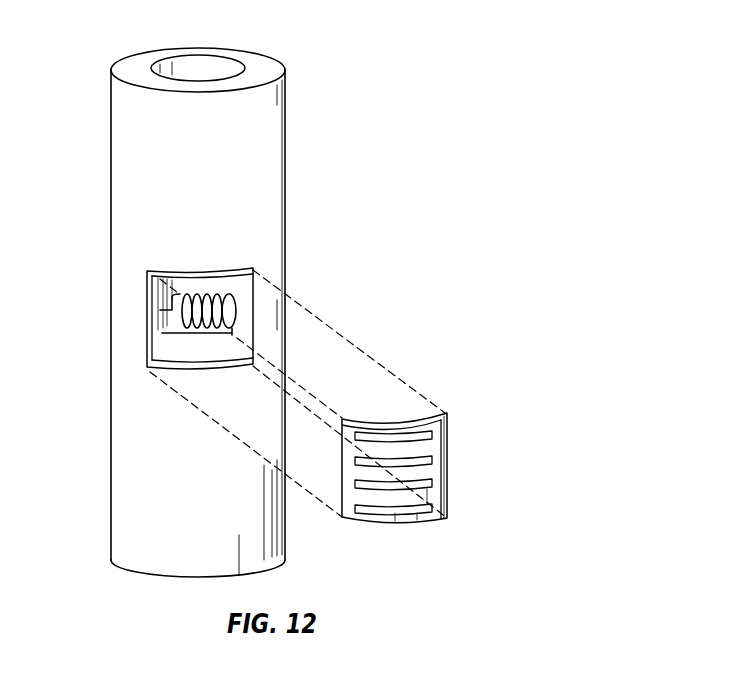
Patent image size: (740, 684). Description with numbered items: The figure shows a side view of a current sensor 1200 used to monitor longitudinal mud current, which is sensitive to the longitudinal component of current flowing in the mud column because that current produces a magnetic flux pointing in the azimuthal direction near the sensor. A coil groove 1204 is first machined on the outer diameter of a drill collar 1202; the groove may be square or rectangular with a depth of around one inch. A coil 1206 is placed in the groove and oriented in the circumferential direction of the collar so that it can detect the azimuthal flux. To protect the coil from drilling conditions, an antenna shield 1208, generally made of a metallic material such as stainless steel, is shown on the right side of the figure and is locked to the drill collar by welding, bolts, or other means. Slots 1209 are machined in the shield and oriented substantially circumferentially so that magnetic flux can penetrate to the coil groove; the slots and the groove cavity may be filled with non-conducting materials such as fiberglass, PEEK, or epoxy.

The current sensor 1200 is at (436, 78).
The drill collar 1202 is at (112, 153).
The coil groove 1204 is at (163, 348).
The coil 1206 is at (170, 307).
The antenna shield 1208 is at (447, 503).
The slots 1209 is at (438, 461).